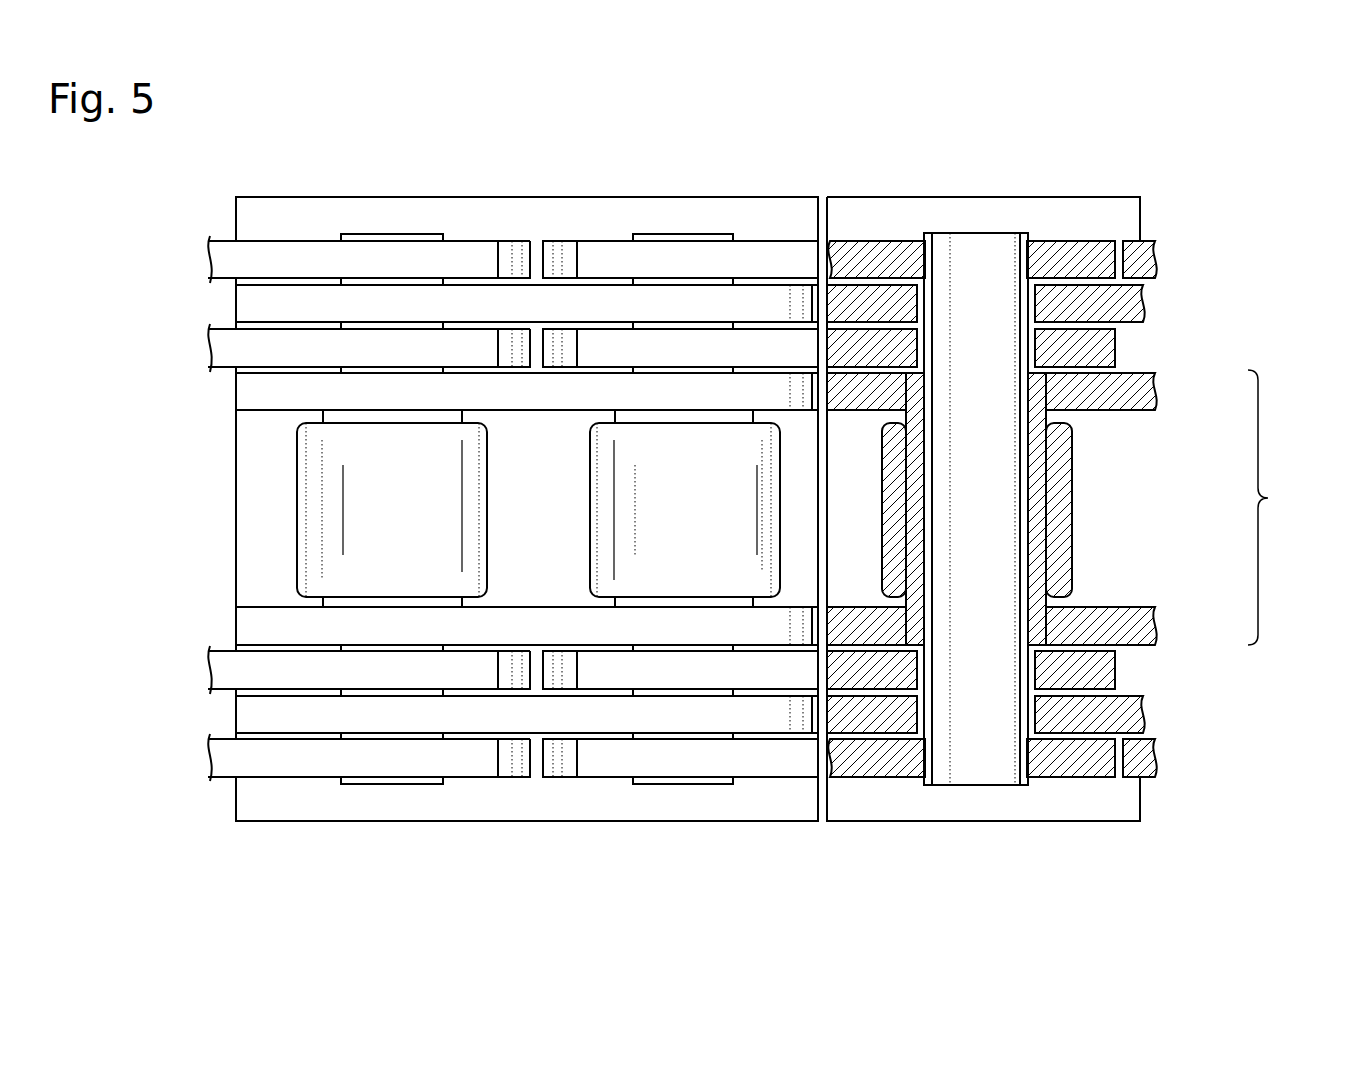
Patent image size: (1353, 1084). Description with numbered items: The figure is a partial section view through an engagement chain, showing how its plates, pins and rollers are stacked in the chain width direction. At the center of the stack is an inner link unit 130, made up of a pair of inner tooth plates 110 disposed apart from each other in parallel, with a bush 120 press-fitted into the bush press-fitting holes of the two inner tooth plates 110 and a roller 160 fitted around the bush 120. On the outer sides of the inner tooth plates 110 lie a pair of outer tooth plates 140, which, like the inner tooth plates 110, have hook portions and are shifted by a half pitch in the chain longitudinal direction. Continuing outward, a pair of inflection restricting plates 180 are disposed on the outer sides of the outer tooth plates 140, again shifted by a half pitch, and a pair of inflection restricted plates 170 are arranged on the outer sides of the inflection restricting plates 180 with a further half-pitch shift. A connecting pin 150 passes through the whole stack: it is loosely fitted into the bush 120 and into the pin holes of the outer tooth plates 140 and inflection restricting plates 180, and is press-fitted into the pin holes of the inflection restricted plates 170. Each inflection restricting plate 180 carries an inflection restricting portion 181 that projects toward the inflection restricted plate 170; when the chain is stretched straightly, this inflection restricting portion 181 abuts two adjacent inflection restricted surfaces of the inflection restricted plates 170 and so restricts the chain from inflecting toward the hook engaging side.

The inner tooth plate 110 is at (248, 386).
The bush 120 is at (1040, 455).
The inner link unit 130 is at (1286, 507).
The outer tooth plate 140 is at (216, 349).
The connecting pin 150 is at (972, 765).
The roller 160 is at (318, 512).
The inflection restricted plate 170 is at (216, 258).
The inflection restricting plate 180 is at (248, 300).
The inflection restricting portion 181 is at (510, 210).